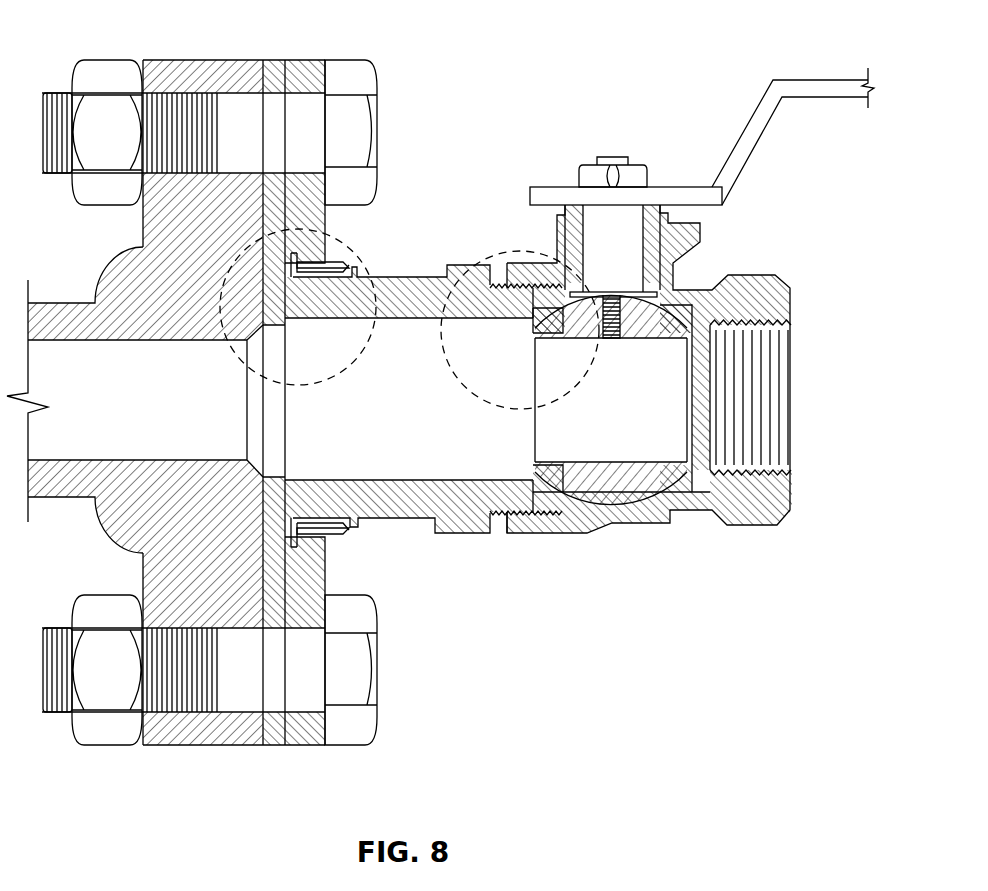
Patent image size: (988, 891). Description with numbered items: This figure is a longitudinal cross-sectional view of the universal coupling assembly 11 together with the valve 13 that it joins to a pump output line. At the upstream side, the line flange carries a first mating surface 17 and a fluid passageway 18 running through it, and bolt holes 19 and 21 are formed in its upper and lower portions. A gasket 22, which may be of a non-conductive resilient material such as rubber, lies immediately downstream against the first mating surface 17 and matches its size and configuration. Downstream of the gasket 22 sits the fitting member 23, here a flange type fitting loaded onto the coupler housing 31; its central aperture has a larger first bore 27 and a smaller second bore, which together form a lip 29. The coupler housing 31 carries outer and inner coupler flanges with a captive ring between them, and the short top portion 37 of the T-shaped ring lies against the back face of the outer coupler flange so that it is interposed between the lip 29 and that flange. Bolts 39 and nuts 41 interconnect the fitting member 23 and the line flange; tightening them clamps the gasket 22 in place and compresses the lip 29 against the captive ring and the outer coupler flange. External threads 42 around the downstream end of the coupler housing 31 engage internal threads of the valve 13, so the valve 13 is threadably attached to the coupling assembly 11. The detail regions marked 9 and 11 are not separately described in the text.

The detail region of flange joint 9 is at (292, 386).
The universal coupling assembly 11 is at (415, 170).
The valve 13 is at (630, 535).
The first mating surface 17 is at (257, 72).
The fluid passageway 18 is at (100, 340).
The bolt hole 19 is at (230, 88).
The bolt hole 21 is at (230, 712).
The gasket 22 is at (275, 72).
The fitting member 23 is at (310, 60).
The first bore 27 is at (300, 236).
The lip 29 is at (320, 260).
The coupler housing 31 is at (428, 276).
The short top portion 37 is at (378, 103).
The bolt 39 is at (378, 700).
The nut 41 is at (93, 207).
The external threads 42 is at (497, 287).